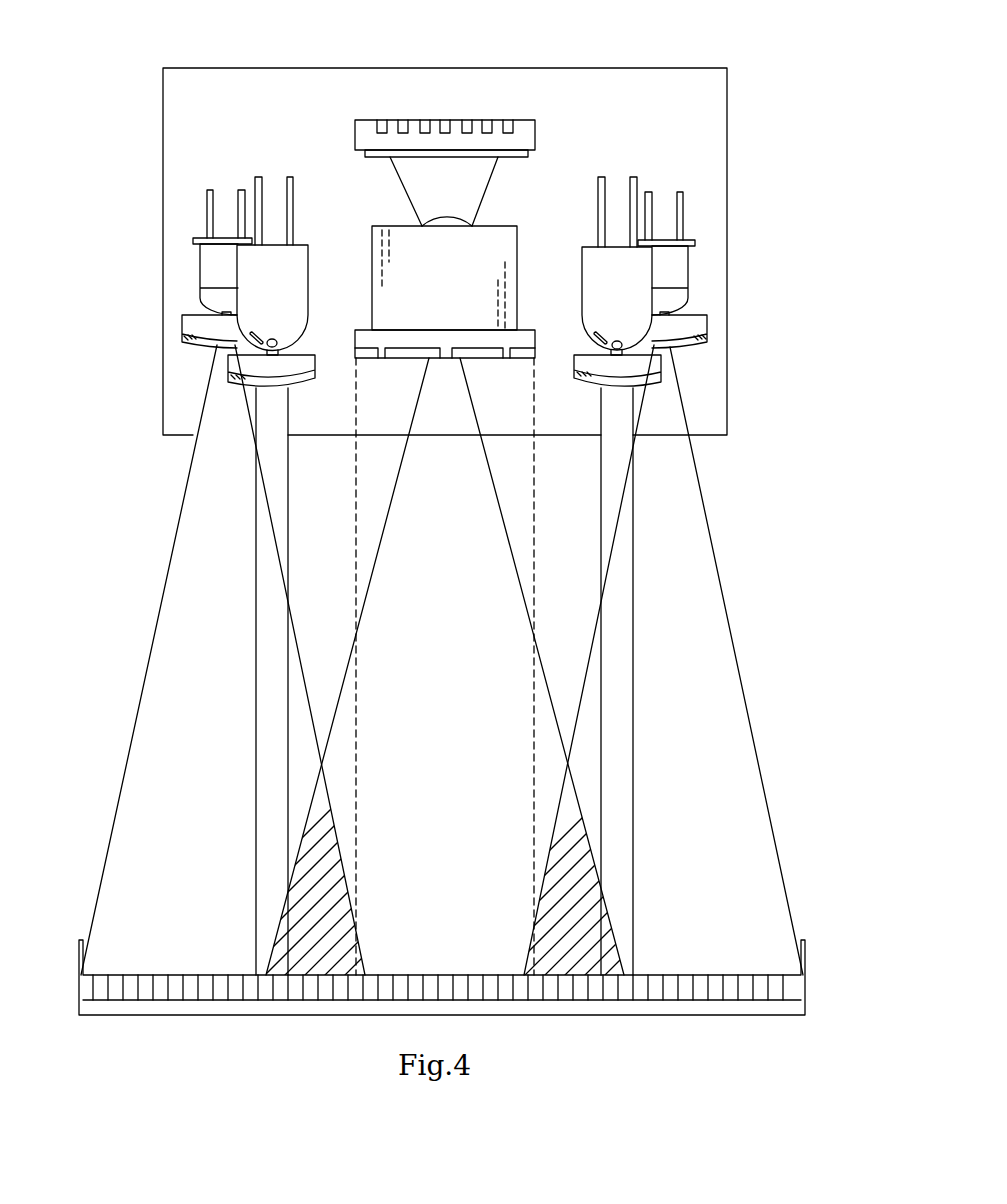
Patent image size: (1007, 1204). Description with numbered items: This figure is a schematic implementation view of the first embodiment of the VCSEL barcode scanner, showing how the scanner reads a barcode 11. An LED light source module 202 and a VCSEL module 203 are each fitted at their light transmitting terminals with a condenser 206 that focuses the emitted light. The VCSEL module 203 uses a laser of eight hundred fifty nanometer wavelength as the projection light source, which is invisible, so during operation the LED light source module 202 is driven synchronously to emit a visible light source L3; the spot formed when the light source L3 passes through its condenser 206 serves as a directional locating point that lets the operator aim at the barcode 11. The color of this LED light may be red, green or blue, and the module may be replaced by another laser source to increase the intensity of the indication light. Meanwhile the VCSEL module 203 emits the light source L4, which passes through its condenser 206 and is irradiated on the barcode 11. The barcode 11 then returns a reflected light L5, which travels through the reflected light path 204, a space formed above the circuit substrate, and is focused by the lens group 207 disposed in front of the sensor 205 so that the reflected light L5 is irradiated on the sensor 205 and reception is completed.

The sensor 205 is at (436, 128).
The lens group 207 is at (380, 232).
The LED light source module 202 is at (607, 257).
The VCSEL module 203 is at (678, 278).
The condenser 206 is at (698, 327).
The reflected light path 204 is at (367, 555).
The light source L3 is at (607, 480).
The light source L4 is at (690, 740).
The reflected light L5 is at (470, 930).
The barcode 11 is at (661, 993).